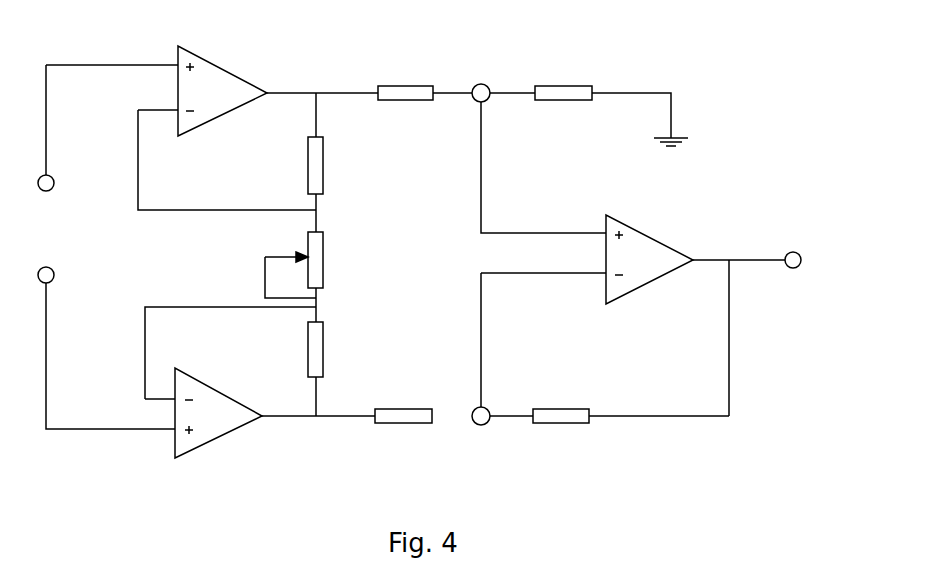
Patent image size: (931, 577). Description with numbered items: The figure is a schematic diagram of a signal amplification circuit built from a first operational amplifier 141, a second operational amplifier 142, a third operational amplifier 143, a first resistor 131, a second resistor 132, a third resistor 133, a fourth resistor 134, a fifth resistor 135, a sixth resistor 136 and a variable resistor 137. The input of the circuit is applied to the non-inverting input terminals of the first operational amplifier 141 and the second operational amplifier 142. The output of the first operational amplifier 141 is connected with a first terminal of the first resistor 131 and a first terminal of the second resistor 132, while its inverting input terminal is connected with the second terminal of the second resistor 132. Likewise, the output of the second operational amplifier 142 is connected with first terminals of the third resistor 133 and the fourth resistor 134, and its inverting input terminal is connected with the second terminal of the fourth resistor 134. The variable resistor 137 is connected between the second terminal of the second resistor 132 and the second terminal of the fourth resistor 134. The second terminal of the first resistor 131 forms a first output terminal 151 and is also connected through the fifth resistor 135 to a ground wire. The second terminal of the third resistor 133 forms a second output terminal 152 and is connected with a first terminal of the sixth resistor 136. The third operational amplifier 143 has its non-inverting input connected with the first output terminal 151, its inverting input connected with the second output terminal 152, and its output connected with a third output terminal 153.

The first operational amplifier 141 is at (215, 63).
The second operational amplifier 142 is at (223, 435).
The third operational amplifier 143 is at (654, 233).
The first resistor 131 is at (387, 84).
The second resistor 132 is at (323, 166).
The third resistor 133 is at (403, 409).
The fourth resistor 134 is at (323, 348).
The fifth resistor 135 is at (563, 86).
The sixth resistor 136 is at (560, 423).
The variable resistor 137 is at (323, 260).
The first output terminal 151 is at (484, 85).
The second output terminal 152 is at (481, 425).
The third output terminal 153 is at (793, 252).